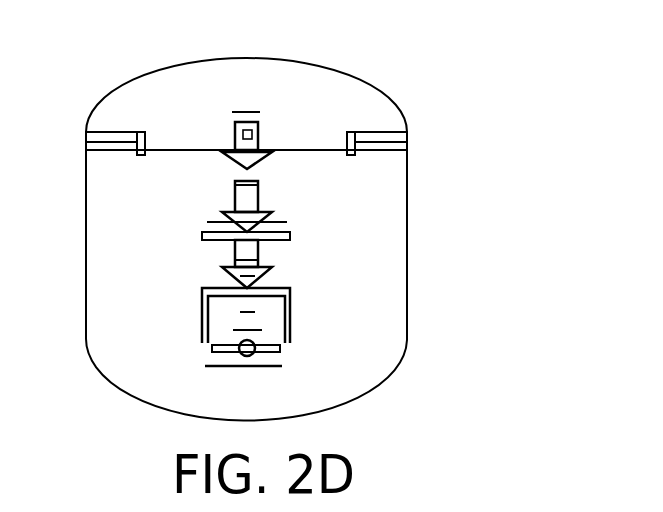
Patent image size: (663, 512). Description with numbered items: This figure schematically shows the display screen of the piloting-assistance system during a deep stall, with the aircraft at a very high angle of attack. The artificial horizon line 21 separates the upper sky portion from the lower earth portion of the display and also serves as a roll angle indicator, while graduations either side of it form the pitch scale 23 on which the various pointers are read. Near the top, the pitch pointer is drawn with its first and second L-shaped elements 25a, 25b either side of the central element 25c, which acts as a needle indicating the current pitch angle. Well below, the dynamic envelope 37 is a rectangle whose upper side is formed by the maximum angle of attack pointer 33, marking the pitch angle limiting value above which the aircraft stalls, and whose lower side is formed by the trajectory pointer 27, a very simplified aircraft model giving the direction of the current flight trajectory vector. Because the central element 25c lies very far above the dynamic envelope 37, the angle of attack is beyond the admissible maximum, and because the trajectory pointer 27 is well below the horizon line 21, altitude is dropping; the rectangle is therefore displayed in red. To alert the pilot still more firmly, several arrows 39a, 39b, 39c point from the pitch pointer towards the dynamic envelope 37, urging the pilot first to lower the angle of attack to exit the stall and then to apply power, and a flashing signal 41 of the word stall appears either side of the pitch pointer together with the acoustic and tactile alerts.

The artificial horizon line 21 is at (383, 150).
The pitch scale 23 is at (284, 298).
The first L-shaped element 25a is at (118, 131).
The second L-shaped element 25b is at (373, 132).
The central element 25c is at (249, 131).
The trajectory pointer 27 is at (278, 350).
The maximum angle of attack pointer 33 is at (283, 232).
The dynamic envelope 37 is at (293, 297).
The arrow 39a is at (234, 146).
The arrow 39b is at (235, 188).
The arrow 39c is at (235, 247).
The flashing signal 41 is at (186, 97).